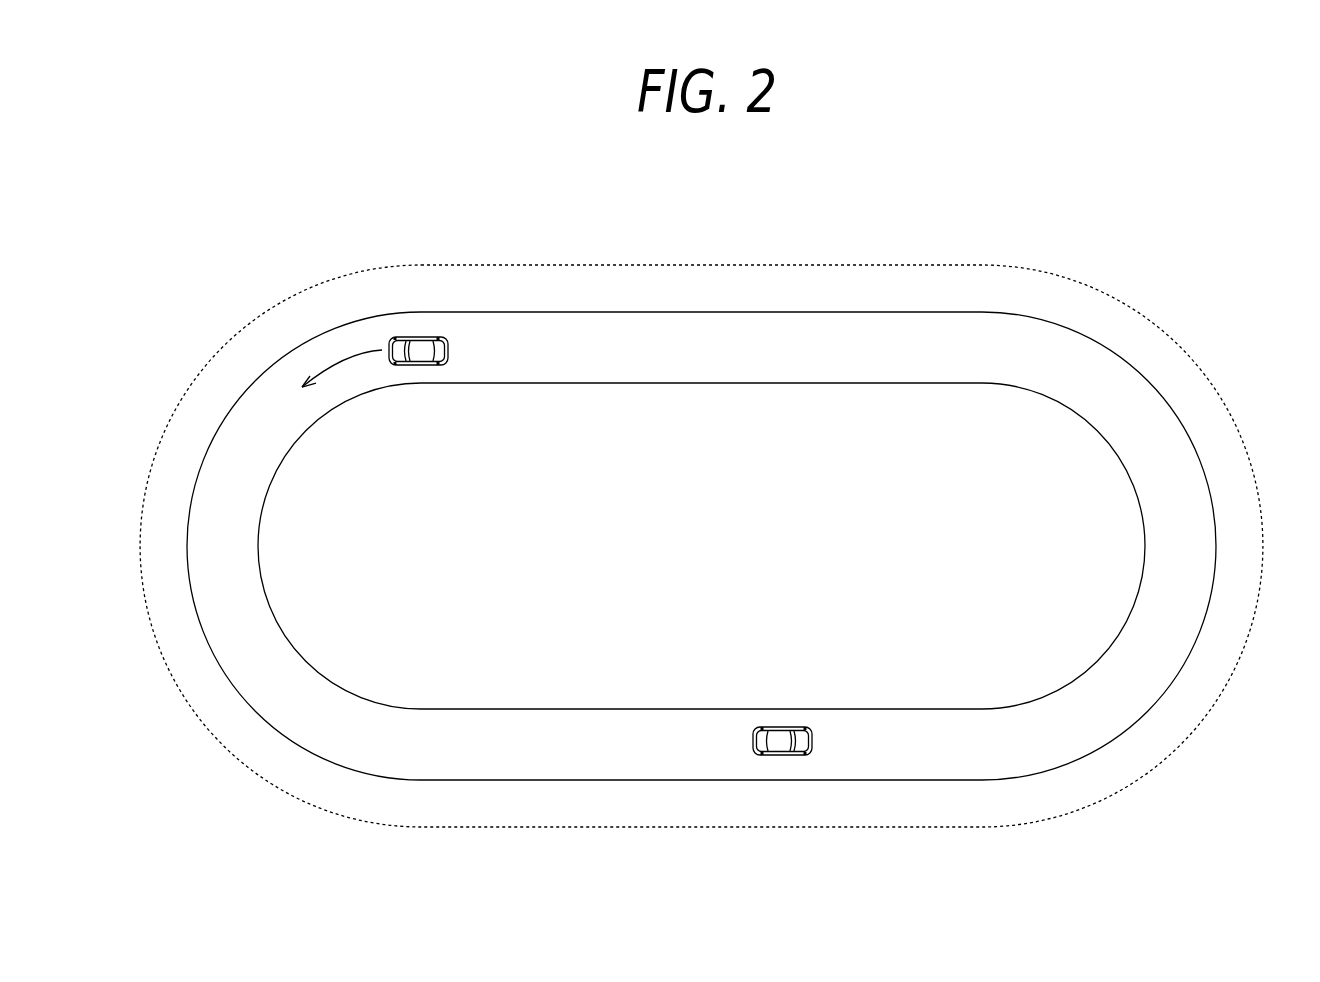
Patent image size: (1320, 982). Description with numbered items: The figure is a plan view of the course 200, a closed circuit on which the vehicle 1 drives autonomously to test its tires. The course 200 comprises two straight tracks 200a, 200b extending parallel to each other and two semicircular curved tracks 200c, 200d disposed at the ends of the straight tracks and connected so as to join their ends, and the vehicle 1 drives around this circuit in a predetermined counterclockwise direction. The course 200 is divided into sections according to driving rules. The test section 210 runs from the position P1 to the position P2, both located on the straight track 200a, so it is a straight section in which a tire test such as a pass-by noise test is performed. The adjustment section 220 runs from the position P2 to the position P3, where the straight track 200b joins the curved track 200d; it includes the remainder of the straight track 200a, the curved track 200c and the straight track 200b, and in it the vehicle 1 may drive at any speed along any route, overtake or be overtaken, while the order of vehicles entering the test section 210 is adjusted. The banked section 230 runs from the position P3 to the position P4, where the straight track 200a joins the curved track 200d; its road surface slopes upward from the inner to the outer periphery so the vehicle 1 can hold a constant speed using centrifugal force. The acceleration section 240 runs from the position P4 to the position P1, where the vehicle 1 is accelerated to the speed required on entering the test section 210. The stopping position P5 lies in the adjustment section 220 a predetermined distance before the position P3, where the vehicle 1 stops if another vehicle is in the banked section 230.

The course 200 is at (1143, 243).
The test section 210 is at (630, 265).
The adjustment section 220 is at (337, 278).
The banked section 230 is at (1180, 347).
The acceleration section 240 is at (866, 265).
The straight track 200a is at (690, 368).
The straight track 200b is at (612, 730).
The curved track 200c is at (243, 562).
The curved track 200d is at (1165, 543).
The vehicle 1 is at (405, 365).
The position P1 is at (747, 395).
The position P2 is at (515, 393).
The position P3 is at (982, 697).
The position P4 is at (982, 395).
The stopping position P5 is at (836, 762).